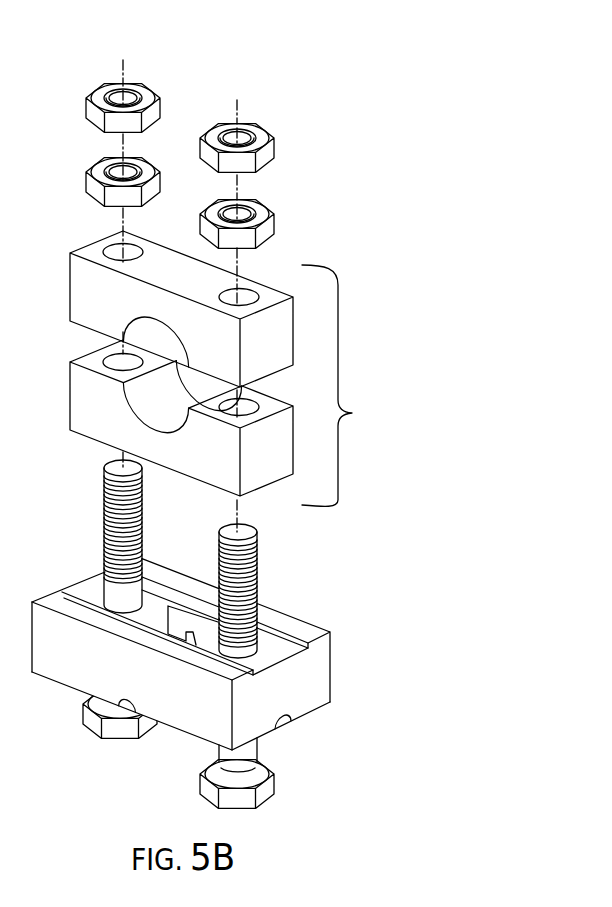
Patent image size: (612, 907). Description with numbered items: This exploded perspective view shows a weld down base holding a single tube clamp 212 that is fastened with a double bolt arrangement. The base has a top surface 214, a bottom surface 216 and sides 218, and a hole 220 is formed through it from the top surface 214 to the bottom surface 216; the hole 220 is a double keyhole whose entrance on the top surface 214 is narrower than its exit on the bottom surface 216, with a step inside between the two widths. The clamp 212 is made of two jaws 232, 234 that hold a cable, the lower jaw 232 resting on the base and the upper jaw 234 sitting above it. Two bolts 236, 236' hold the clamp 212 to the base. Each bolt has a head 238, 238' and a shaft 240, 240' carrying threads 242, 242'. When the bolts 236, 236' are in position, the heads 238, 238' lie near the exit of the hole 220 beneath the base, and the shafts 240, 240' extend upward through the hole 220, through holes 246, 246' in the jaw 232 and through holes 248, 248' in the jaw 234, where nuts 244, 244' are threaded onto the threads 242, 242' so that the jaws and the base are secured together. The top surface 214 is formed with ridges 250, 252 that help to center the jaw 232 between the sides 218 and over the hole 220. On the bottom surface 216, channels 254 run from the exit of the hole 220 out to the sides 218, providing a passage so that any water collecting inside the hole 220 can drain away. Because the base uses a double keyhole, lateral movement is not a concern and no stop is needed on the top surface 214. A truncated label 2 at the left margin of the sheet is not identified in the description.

The clamp assembly 2 is at (0, 654).
The clamp 212 is at (340, 385).
The top surface 214 is at (168, 631).
The bottom surface 216 is at (73, 692).
The sides 218 is at (43, 632).
The hole 220 is at (195, 617).
The jaw 232 is at (183, 423).
The jaw 234 is at (182, 300).
The bolt 236 is at (127, 604).
The bolt 236' is at (257, 672).
The head 238 is at (120, 727).
The head 238' is at (238, 799).
The shaft 240 is at (105, 460).
The shaft 240' is at (258, 523).
The threads 242 is at (105, 540).
The threads 242' is at (258, 595).
The nut 244 is at (115, 145).
The nut 244' is at (248, 186).
The hole 246 is at (98, 352).
The hole 246' is at (266, 394).
The hole 248 is at (138, 237).
The hole 248' is at (257, 276).
The ridge 250 is at (223, 670).
The ridge 252 is at (312, 628).
The channel 254 is at (126, 709).